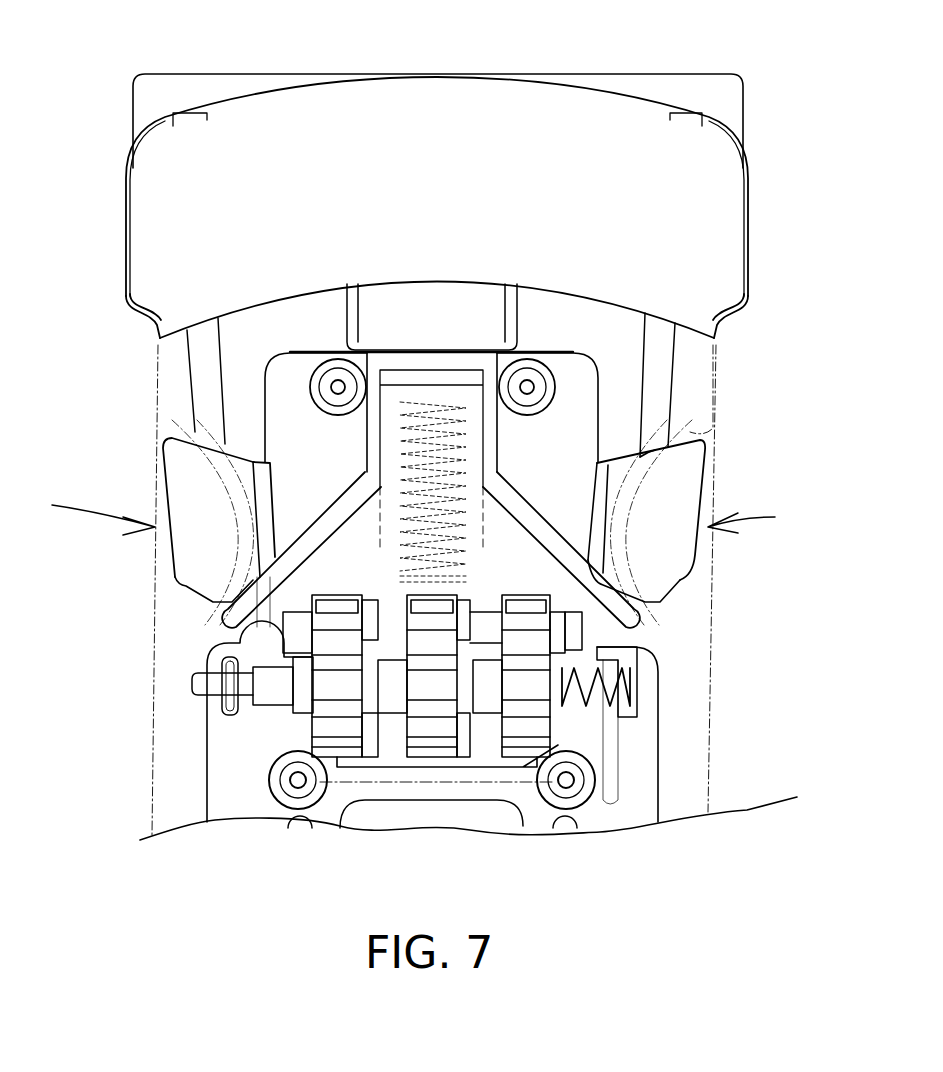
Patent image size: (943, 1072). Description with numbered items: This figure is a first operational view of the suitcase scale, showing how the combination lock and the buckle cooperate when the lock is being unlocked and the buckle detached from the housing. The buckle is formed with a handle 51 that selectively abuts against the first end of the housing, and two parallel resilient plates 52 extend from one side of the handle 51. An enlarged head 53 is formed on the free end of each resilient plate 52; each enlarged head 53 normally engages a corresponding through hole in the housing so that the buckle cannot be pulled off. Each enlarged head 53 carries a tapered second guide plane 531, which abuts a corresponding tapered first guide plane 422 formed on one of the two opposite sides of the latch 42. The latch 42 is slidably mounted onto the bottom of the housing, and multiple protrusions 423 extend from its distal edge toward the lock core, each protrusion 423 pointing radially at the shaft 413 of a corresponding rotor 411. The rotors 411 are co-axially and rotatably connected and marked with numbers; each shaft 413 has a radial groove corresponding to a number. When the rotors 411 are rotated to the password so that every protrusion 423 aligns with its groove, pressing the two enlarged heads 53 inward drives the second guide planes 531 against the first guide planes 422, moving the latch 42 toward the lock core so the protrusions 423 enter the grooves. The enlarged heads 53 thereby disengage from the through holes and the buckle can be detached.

The handle 51 is at (537, 117).
The resilient plates 52 is at (660, 365).
The latch 42 is at (318, 502).
The first guide plane 422 is at (550, 538).
The enlarged head 53 is at (673, 565).
The second guide plane 531 is at (647, 602).
The protrusions 423 is at (485, 643).
The rotors 411 is at (535, 708).
The shaft 413 is at (485, 702).